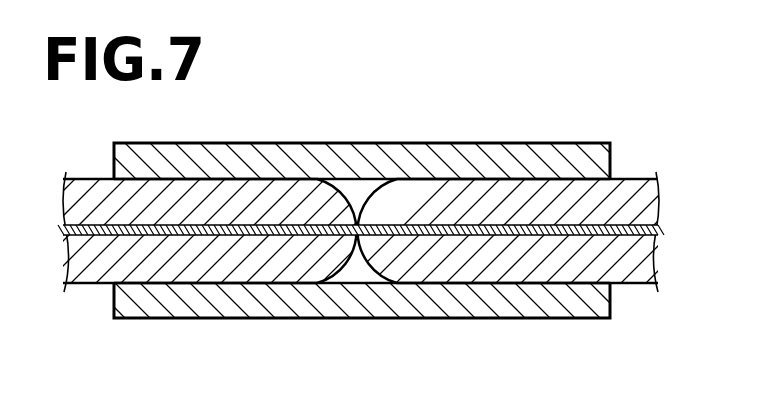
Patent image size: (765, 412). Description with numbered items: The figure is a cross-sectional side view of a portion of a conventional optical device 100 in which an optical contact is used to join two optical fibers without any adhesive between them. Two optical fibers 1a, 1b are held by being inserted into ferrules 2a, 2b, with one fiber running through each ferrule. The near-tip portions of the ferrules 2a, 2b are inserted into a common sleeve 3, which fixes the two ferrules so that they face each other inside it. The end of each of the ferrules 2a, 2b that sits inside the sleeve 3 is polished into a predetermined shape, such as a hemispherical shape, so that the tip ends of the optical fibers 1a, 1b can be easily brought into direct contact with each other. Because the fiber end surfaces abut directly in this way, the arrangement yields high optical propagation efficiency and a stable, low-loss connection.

The optical device 100 is at (593, 68).
The optical fiber 1a is at (83, 230).
The optical fiber 1b is at (627, 226).
The ferrule 2a is at (92, 275).
The ferrule 2b is at (640, 275).
The sleeve 3 is at (347, 155).